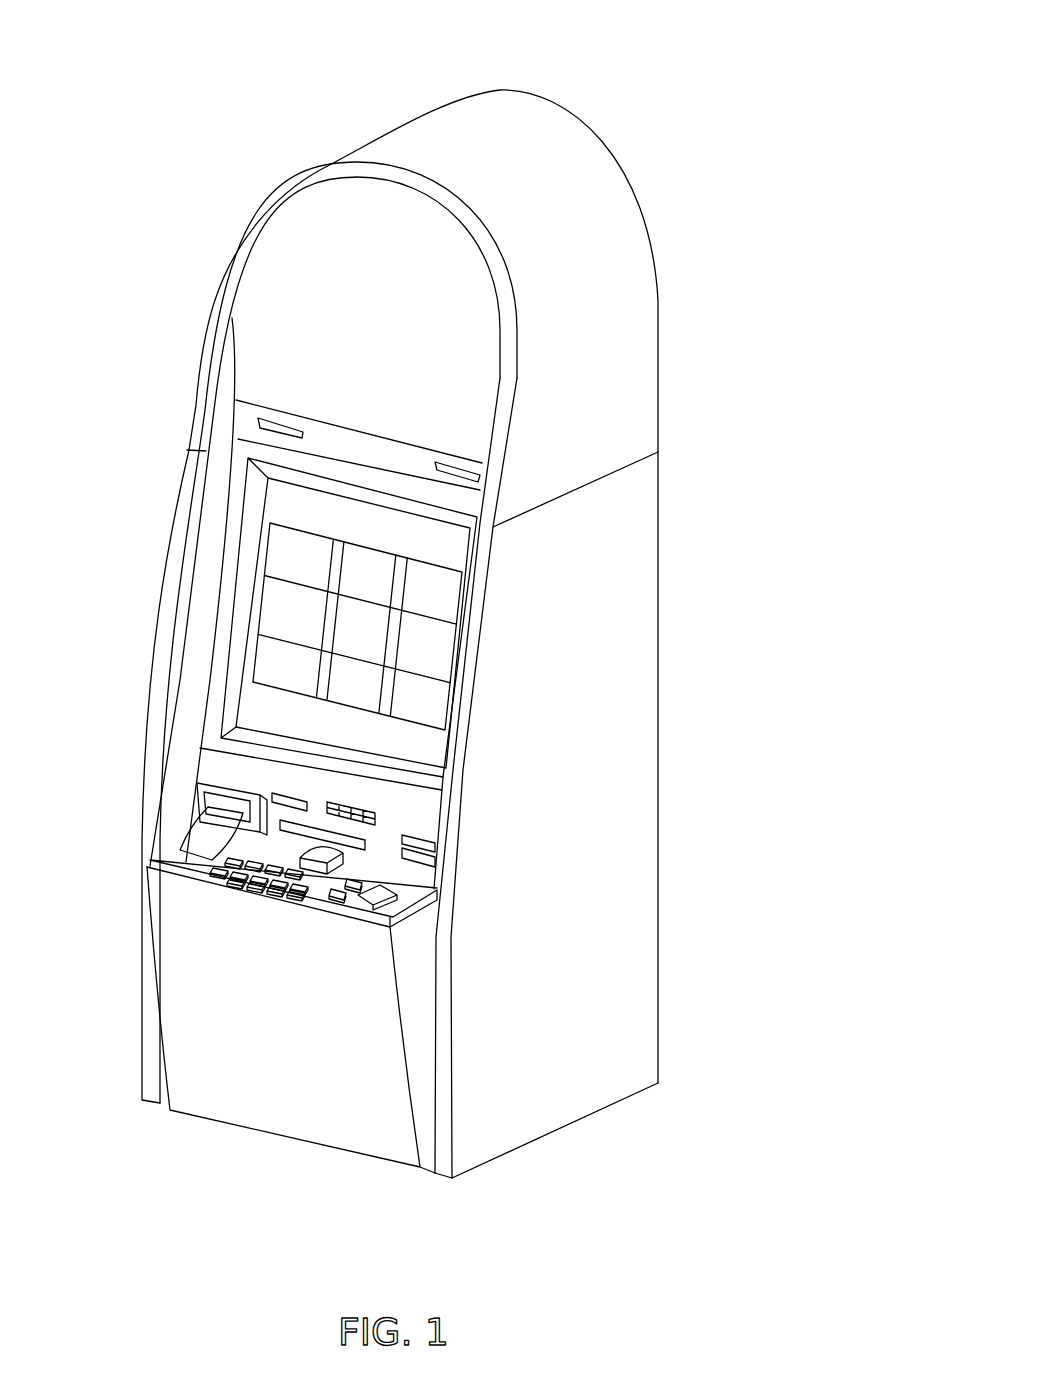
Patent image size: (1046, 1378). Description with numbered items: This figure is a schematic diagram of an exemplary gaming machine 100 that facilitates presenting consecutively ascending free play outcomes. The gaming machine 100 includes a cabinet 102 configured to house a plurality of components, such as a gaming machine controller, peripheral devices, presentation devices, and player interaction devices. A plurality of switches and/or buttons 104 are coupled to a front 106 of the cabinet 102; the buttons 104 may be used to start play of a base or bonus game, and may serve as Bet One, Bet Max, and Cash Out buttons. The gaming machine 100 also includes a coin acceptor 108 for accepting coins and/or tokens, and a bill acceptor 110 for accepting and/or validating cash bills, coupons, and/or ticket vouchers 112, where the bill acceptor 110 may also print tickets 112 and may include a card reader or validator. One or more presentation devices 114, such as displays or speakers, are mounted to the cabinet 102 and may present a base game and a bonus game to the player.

The gaming machine 100 is at (414, 592).
The cabinet 102 is at (603, 177).
The buttons 104 is at (250, 880).
The front 106 is at (247, 418).
The coin acceptor 108 is at (320, 867).
The bill acceptor 110 is at (197, 785).
The ticket vouchers 112 is at (200, 842).
The presentation devices 114 is at (427, 695).